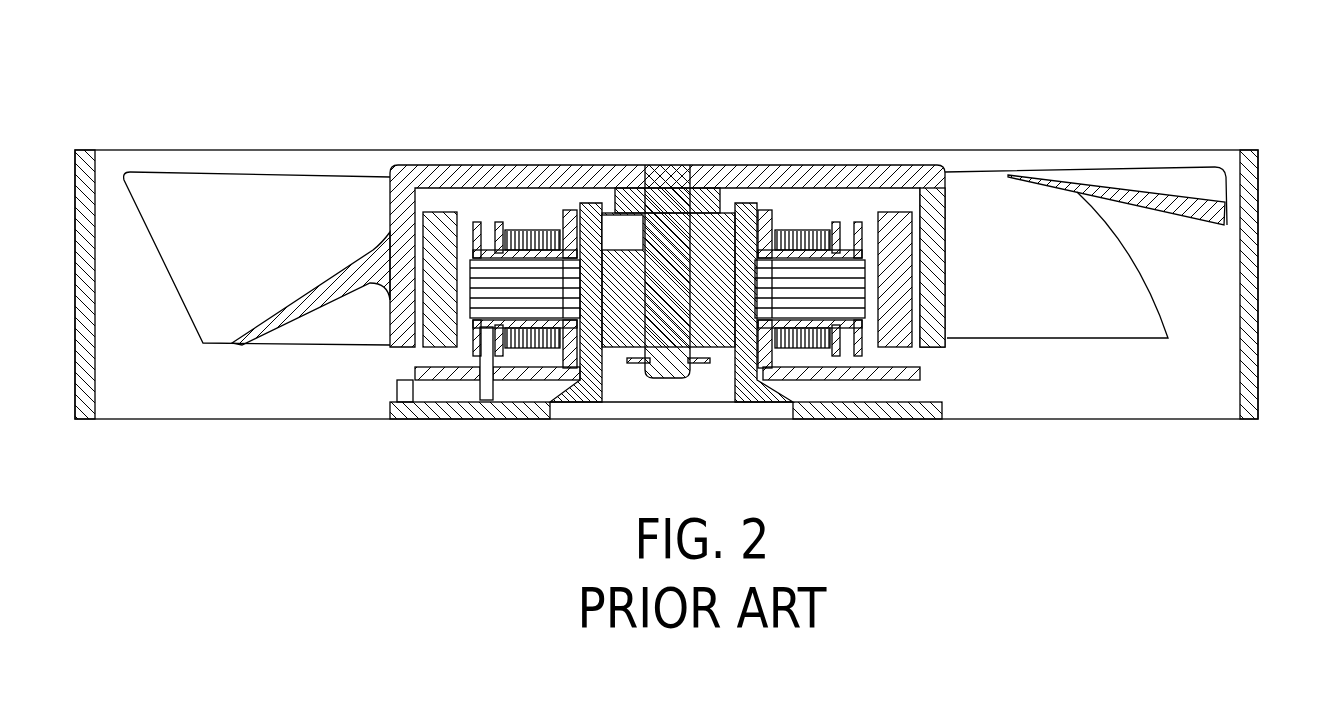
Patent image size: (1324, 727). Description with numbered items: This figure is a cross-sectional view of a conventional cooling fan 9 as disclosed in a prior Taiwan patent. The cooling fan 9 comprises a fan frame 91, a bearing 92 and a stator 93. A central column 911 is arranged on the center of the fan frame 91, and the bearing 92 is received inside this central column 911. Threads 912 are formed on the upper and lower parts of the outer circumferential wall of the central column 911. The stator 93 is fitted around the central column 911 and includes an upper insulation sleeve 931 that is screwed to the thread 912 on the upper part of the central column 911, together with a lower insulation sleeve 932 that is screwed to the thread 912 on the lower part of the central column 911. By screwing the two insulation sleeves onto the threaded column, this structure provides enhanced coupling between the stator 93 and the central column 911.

The cooling fan 9 is at (1042, 100).
The fan frame 91 is at (1258, 205).
The central column 911 is at (728, 345).
The threads 912 is at (762, 235).
The bearing 92 is at (633, 245).
The stator 93 is at (807, 200).
The upper insulation sleeve 931 is at (837, 225).
The lower insulation sleeve 932 is at (837, 348).